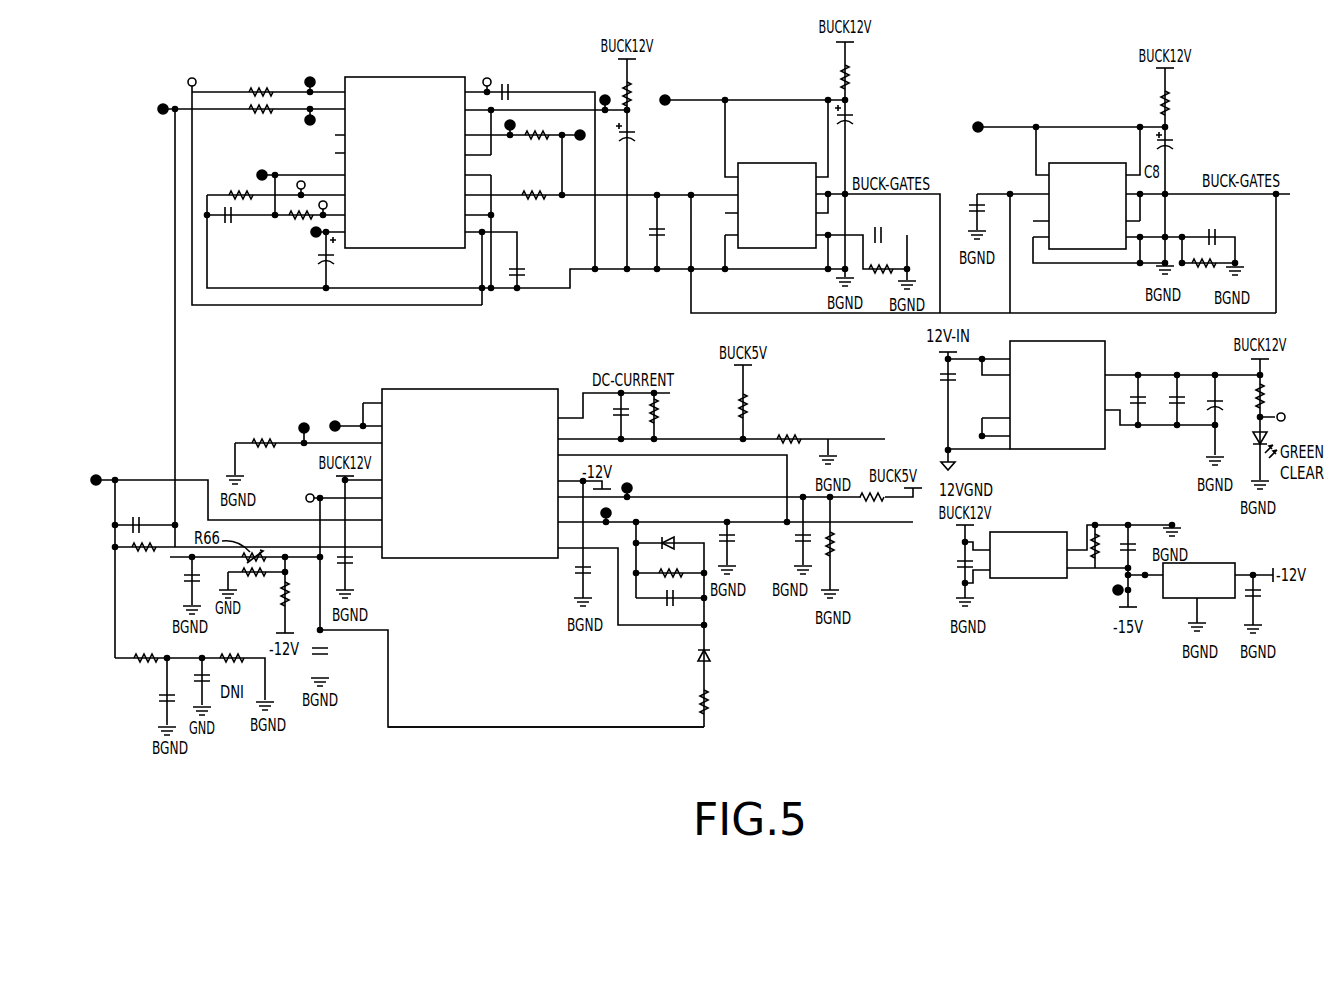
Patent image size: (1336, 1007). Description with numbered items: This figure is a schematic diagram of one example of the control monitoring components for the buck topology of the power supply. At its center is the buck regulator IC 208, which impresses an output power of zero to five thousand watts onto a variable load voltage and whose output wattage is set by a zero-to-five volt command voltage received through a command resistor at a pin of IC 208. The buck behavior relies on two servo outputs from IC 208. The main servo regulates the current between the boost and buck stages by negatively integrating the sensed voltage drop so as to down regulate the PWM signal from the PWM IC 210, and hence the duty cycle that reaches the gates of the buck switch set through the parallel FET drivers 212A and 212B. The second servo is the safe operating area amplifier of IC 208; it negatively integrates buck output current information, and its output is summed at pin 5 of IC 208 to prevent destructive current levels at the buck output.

The buck regulator IC 208 is at (471, 389).
The PWM IC 210 is at (429, 250).
The parallel FET driver 212A is at (780, 248).
The parallel FET driver 212B is at (1083, 249).
The pin 5 of the buck regulator IC 5 is at (382, 498).